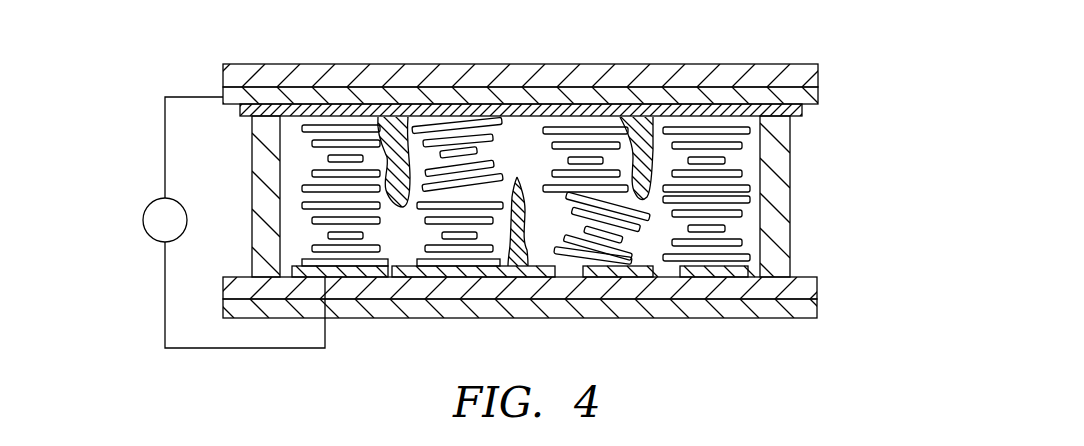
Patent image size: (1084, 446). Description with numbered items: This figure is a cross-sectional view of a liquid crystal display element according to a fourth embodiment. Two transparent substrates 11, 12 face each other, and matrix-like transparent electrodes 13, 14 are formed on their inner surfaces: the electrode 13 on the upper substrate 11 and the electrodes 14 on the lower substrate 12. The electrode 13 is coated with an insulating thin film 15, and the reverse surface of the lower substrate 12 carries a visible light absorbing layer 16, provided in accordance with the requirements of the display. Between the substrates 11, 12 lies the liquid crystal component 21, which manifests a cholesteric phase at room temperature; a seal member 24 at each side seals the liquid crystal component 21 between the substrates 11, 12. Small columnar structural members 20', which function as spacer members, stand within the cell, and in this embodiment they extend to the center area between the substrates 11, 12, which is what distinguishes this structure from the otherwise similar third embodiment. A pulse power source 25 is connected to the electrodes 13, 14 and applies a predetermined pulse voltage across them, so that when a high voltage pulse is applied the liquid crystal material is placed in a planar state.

The transparent substrate 11 is at (762, 75).
The transparent electrode 13 is at (487, 93).
The insulating thin film 15 is at (802, 110).
The transparent substrate 12 is at (810, 290).
The visible light absorbing layer 16 is at (770, 312).
The transparent electrode 14 is at (356, 283).
The small columnar structural member 20' is at (527, 144).
The liquid crystal component 21 is at (750, 225).
The seal member 24 is at (258, 160).
The pulse power source 25 is at (143, 221).